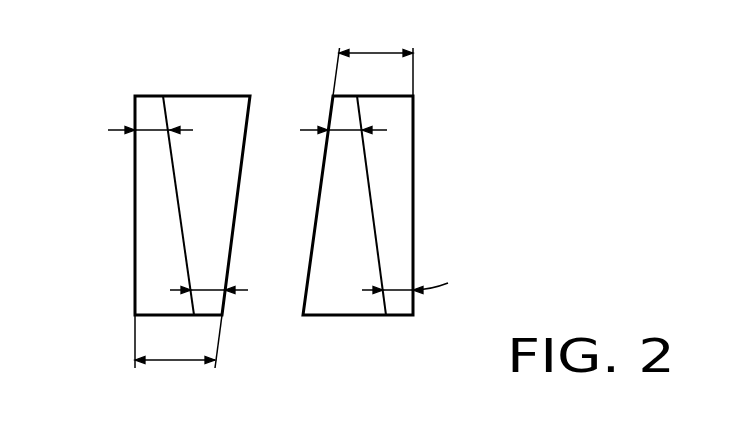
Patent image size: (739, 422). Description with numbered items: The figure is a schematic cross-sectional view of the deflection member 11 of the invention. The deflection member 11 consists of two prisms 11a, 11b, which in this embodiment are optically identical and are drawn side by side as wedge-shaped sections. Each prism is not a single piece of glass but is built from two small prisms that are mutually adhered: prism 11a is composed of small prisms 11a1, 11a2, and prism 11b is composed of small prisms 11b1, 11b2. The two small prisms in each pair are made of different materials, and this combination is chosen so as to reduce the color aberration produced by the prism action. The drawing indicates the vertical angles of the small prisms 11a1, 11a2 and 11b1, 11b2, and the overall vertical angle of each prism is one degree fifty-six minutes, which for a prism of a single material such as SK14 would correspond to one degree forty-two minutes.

The deflection member 11 is at (283, 80).
The prism 11a is at (252, 40).
The small prism 11a1 is at (153, 103).
The small prism 11a2 is at (212, 108).
The prism 11b is at (443, 357).
The small prism 11b1 is at (398, 300).
The small prism 11b2 is at (338, 300).